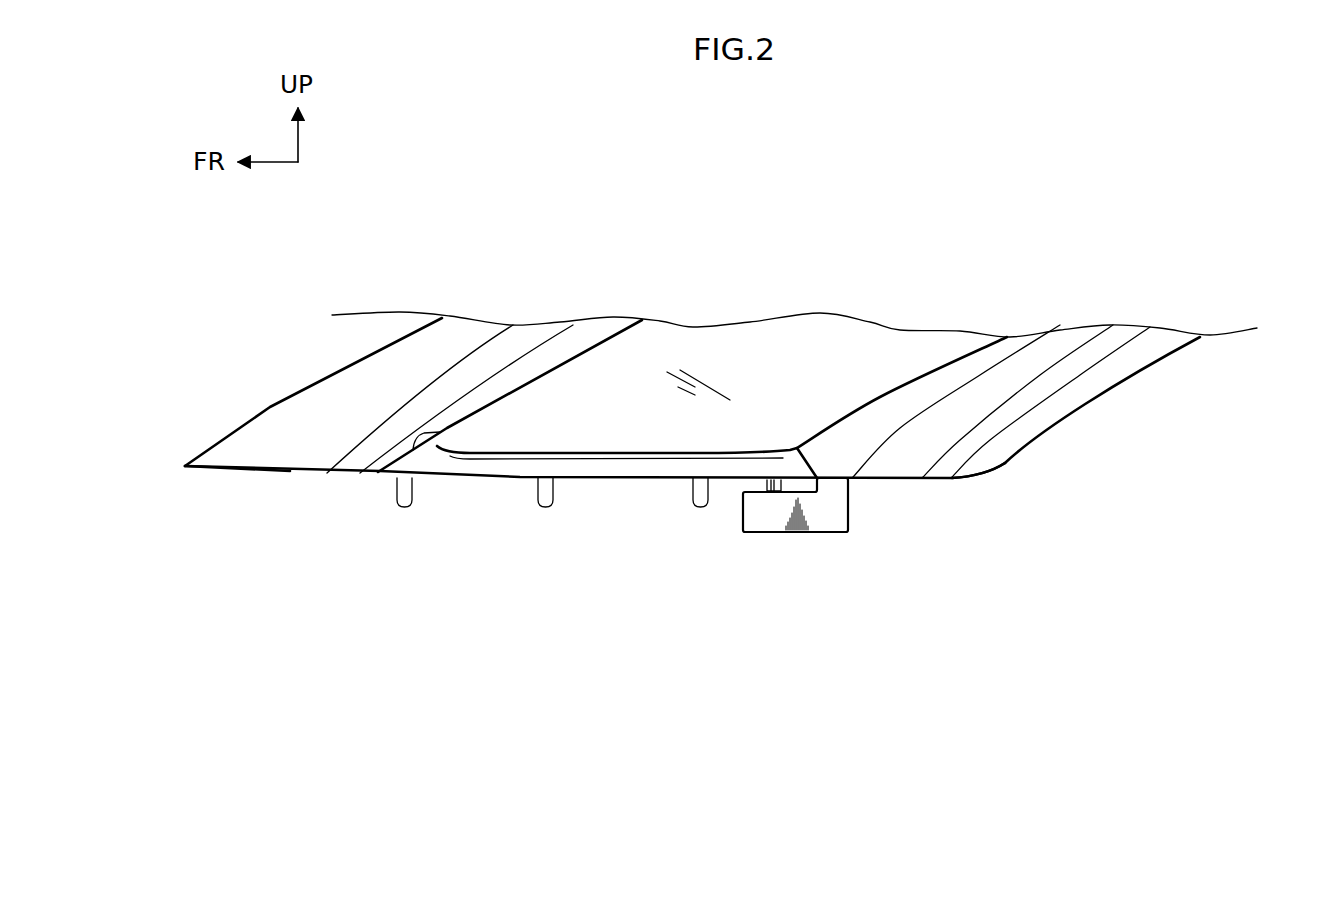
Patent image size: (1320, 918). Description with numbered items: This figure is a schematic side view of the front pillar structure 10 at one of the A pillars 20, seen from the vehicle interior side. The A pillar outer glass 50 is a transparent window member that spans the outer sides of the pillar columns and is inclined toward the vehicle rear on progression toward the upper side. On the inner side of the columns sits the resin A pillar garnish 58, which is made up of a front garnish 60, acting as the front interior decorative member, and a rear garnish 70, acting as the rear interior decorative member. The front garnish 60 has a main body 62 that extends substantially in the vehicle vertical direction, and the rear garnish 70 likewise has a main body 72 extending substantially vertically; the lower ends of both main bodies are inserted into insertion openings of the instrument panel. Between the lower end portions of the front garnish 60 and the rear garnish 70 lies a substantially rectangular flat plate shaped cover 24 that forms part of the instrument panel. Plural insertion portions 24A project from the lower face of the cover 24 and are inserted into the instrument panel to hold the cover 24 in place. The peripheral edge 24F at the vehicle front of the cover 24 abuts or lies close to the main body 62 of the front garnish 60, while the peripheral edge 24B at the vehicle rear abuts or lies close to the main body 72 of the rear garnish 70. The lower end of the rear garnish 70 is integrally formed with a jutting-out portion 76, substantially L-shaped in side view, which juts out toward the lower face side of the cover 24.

The vehicle roof structure 10 is at (879, 545).
The front pillar (A pillar) 20 is at (1076, 270).
The cover 24 is at (692, 458).
The insertion portions 24A is at (404, 507).
The peripheral edge at the vehicle rear of the cover 24B is at (812, 462).
The peripheral edge at the vehicle front of the cover 24F is at (441, 431).
The A pillar outer glass 50 is at (757, 340).
The A pillar garnish 58 is at (699, 397).
The front garnish 60 is at (268, 406).
The main body 62 is at (230, 455).
The rear garnish 70 is at (1118, 394).
The main body 72 is at (997, 445).
The jutting-out portion 76 is at (770, 518).